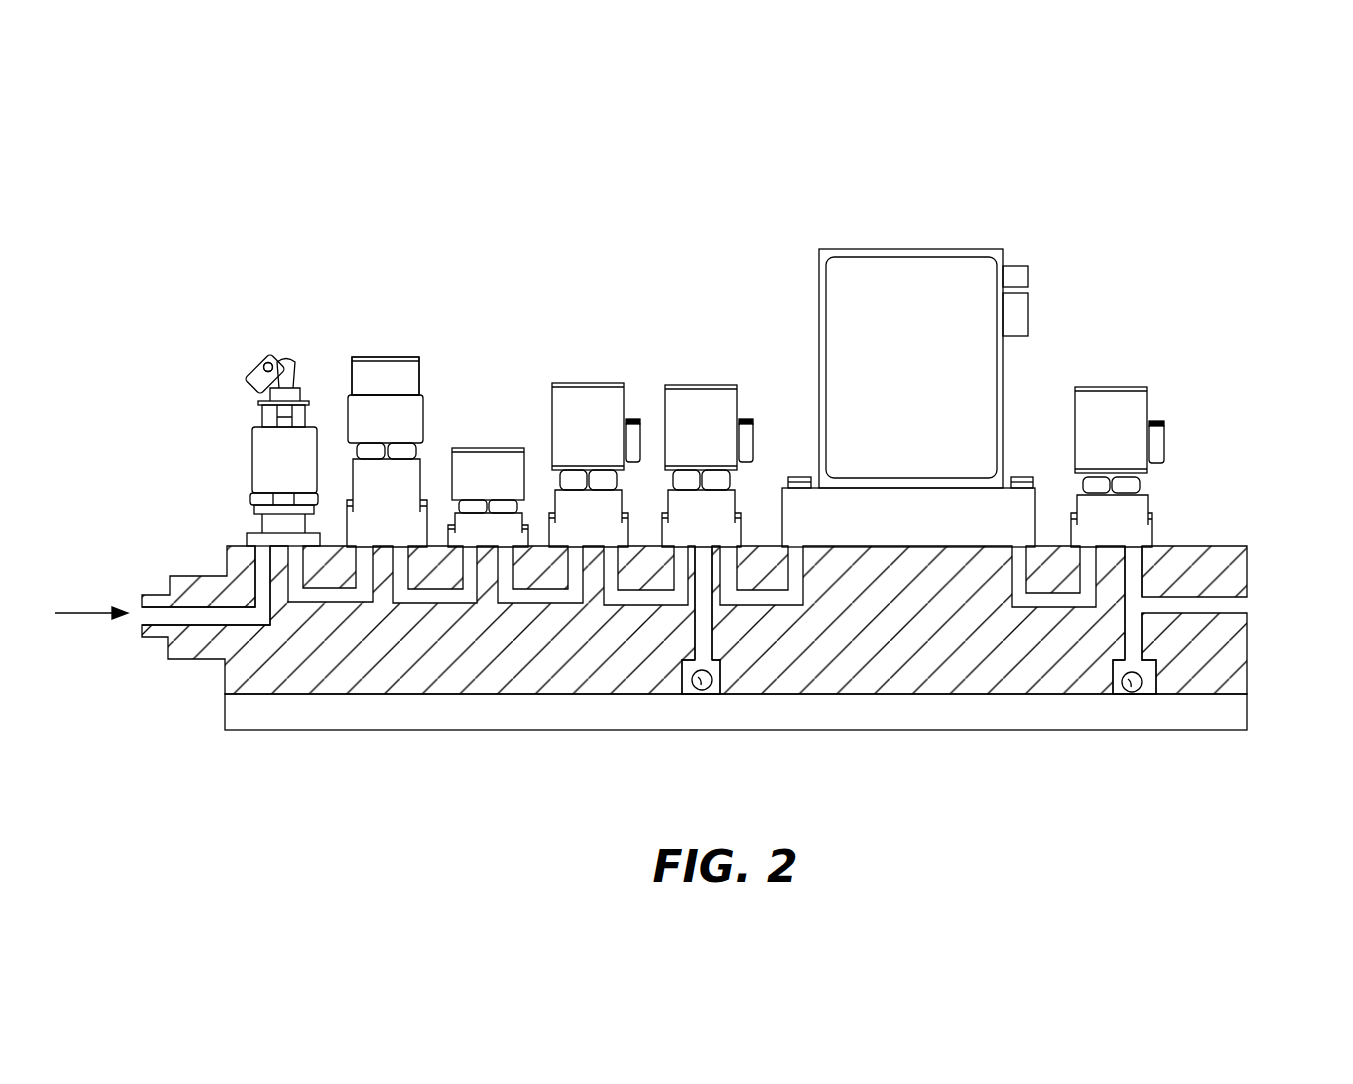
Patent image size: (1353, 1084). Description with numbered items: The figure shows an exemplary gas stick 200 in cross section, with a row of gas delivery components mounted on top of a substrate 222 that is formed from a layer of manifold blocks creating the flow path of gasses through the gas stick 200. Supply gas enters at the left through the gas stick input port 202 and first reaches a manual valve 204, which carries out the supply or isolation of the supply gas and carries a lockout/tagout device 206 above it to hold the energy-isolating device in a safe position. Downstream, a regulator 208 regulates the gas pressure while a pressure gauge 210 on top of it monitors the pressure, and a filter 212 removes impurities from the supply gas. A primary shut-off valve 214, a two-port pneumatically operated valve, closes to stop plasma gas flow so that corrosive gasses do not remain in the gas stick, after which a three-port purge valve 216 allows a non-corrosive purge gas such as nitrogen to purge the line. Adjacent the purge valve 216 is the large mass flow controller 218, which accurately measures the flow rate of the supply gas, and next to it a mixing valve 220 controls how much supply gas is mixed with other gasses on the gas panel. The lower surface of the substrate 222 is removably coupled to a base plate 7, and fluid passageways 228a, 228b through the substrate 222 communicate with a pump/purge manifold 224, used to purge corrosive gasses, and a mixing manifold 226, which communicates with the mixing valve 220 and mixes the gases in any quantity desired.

The gas stick 200 is at (1050, 196).
The gas stick input port 202 is at (185, 612).
The manual valve 204 is at (268, 473).
The lockout/tagout device 206 is at (291, 357).
The regulator 208 is at (369, 431).
The pressure gauge 210 is at (388, 357).
The filter 212 is at (472, 489).
The primary shut-off valve 214 is at (572, 433).
The purge valve 216 is at (685, 441).
The mass flow controller 218 is at (894, 380).
The mixing valve 220 is at (1101, 441).
The substrate 222 is at (1238, 643).
The base plate 7 is at (1232, 679).
The pump/purge manifold 224 is at (694, 660).
The mixing manifold 226 is at (1122, 660).
The fluid passageway 228a is at (700, 641).
The fluid passageway 228b is at (1128, 637).